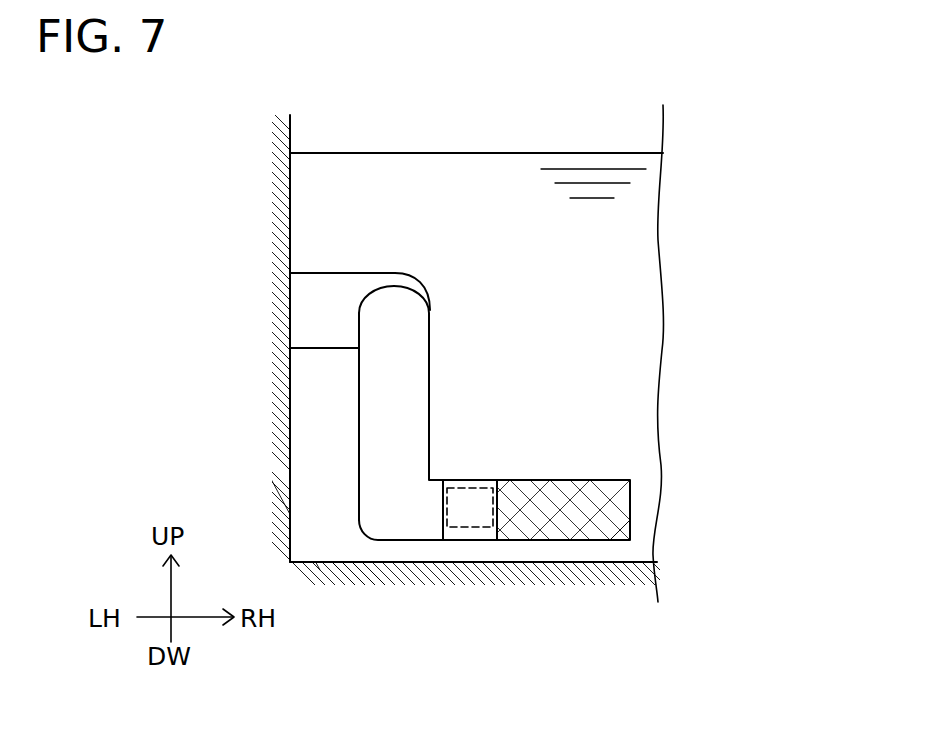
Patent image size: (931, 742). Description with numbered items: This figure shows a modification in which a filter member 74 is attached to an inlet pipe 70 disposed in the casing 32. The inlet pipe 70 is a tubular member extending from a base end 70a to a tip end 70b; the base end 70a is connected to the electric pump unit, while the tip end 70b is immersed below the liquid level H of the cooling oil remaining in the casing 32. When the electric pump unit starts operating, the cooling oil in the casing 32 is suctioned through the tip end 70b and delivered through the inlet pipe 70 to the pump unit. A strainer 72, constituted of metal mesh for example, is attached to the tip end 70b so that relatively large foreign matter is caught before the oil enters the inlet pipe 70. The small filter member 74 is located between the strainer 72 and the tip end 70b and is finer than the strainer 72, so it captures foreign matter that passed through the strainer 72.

The casing 32 is at (278, 247).
The base end 70a is at (287, 313).
The inlet pipe 70 is at (370, 429).
The tip end 70b is at (452, 478).
The filter member 74 is at (473, 495).
The strainer 72 is at (615, 502).
The liquid level H is at (640, 153).